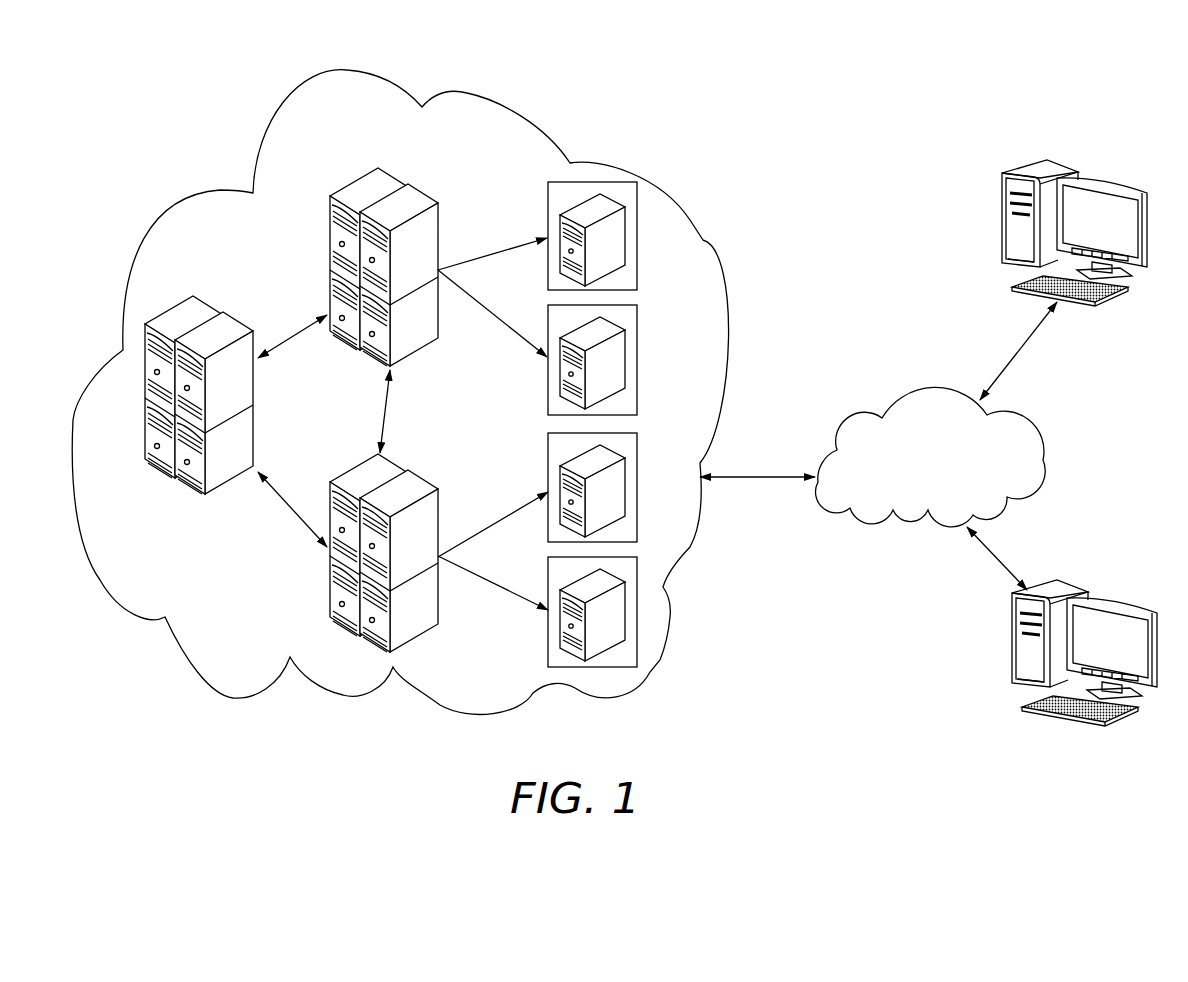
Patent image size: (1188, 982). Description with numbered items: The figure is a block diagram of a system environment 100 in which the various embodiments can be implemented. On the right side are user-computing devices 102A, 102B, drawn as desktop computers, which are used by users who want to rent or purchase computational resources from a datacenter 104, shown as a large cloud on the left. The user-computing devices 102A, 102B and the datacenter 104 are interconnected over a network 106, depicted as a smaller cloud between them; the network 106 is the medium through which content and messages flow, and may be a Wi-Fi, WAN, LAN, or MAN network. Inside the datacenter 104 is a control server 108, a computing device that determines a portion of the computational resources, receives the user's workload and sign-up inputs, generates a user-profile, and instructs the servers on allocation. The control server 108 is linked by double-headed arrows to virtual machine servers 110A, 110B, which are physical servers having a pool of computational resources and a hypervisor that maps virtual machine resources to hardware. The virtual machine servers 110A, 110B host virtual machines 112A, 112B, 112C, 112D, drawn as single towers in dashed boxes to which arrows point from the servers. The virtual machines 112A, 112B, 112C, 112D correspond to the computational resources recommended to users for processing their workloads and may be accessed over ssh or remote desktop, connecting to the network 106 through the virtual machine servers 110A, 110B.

The system environment 100 is at (806, 140).
The user-computing device 102A is at (1038, 165).
The user-computing device 102B is at (1078, 580).
The datacenter 104 is at (705, 240).
The network 106 is at (927, 393).
The control server 108 is at (220, 313).
The virtual machine server 110A is at (410, 190).
The virtual machine server 110B is at (417, 477).
The virtual machine 112A is at (638, 247).
The virtual machine 112B is at (640, 363).
The virtual machine 112C is at (657, 455).
The virtual machine 112D is at (547, 633).